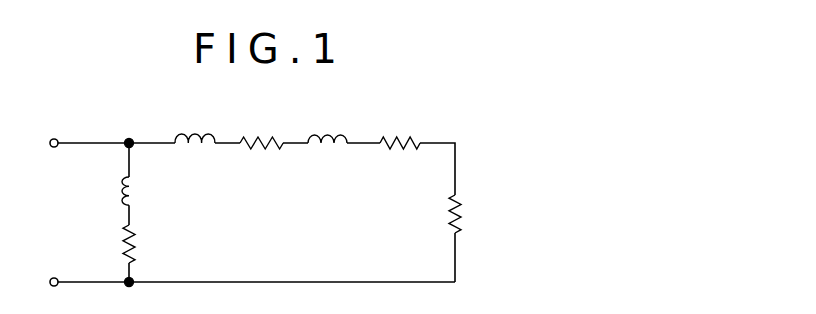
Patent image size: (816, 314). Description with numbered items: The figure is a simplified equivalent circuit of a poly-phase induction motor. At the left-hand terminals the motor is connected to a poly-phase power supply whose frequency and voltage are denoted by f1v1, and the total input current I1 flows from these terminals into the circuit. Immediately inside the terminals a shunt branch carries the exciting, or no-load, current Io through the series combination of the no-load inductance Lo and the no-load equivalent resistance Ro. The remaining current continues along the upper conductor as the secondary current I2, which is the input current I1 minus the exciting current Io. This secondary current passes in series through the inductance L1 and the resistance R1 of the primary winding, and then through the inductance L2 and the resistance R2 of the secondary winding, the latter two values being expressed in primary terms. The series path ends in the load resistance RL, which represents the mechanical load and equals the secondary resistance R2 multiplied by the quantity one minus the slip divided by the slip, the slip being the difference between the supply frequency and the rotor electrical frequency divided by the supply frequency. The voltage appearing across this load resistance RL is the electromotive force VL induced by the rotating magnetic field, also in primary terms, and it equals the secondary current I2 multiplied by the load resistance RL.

The power supply frequency and voltage f1v1 is at (54, 157).
The total input current I1 is at (72, 120).
The secondary current I2 is at (180, 118).
The exciting current Io is at (107, 177).
The no-load inductance Lo is at (138, 176).
The no-load equivalent resistance Ro is at (139, 243).
The primary winding inductance L1 is at (195, 156).
The primary winding resistance R1 is at (261, 157).
The secondary winding inductance L2 is at (327, 156).
The secondary winding resistance R2 is at (400, 157).
The load resistance RL is at (562, 216).
The induced electromotive force VL is at (430, 147).